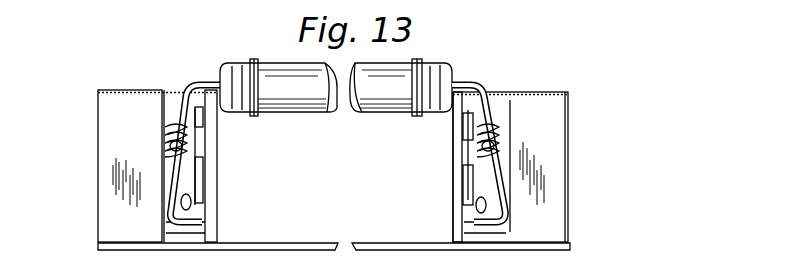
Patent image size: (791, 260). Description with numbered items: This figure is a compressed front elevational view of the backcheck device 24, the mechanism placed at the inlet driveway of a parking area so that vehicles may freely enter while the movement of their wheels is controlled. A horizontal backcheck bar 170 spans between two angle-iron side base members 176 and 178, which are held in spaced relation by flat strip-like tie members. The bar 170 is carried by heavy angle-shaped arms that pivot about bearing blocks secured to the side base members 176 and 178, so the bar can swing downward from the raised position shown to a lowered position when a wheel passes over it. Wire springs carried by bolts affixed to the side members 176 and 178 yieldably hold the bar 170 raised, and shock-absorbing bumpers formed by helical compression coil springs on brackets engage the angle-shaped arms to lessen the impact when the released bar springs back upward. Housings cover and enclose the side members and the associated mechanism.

The backcheck device 24 is at (590, 150).
The horizontal backcheck bar 170 is at (310, 110).
The side base member 176 is at (207, 137).
The side base member 178 is at (455, 193).